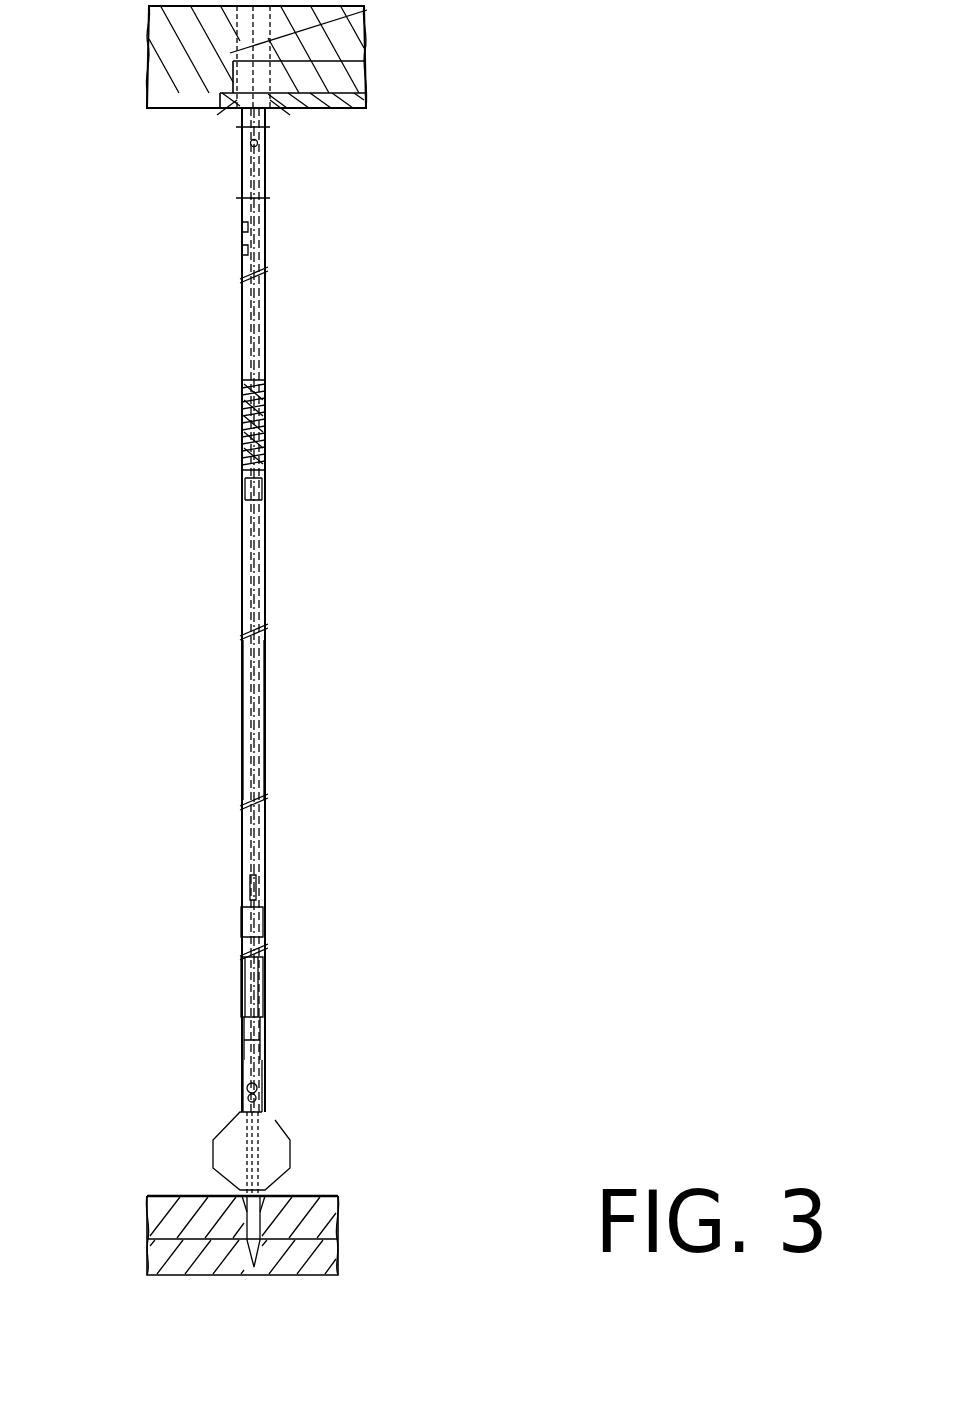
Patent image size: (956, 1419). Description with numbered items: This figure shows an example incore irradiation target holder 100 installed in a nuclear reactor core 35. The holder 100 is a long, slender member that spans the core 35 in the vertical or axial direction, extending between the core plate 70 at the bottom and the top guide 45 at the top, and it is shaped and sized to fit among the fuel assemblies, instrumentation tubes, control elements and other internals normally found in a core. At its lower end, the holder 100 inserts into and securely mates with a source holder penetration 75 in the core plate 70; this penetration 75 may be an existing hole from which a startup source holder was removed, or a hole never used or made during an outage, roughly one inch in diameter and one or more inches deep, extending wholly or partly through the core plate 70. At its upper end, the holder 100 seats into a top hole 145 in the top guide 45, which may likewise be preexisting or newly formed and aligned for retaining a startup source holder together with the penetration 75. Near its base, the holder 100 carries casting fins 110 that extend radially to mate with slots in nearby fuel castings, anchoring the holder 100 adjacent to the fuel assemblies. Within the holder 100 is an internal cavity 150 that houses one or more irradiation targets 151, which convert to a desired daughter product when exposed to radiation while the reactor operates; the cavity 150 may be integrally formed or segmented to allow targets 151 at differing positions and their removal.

The core 35 is at (548, 501).
The top guide 45 is at (343, 82).
The core plate 70 is at (173, 1217).
The source holder penetration 75 is at (267, 1200).
The incore irradiation target holder 100 is at (265, 675).
The casting fin 110 is at (273, 1160).
The top hole 145 is at (263, 110).
The internal cavity 150 is at (262, 858).
The irradiation target 151 is at (242, 755).